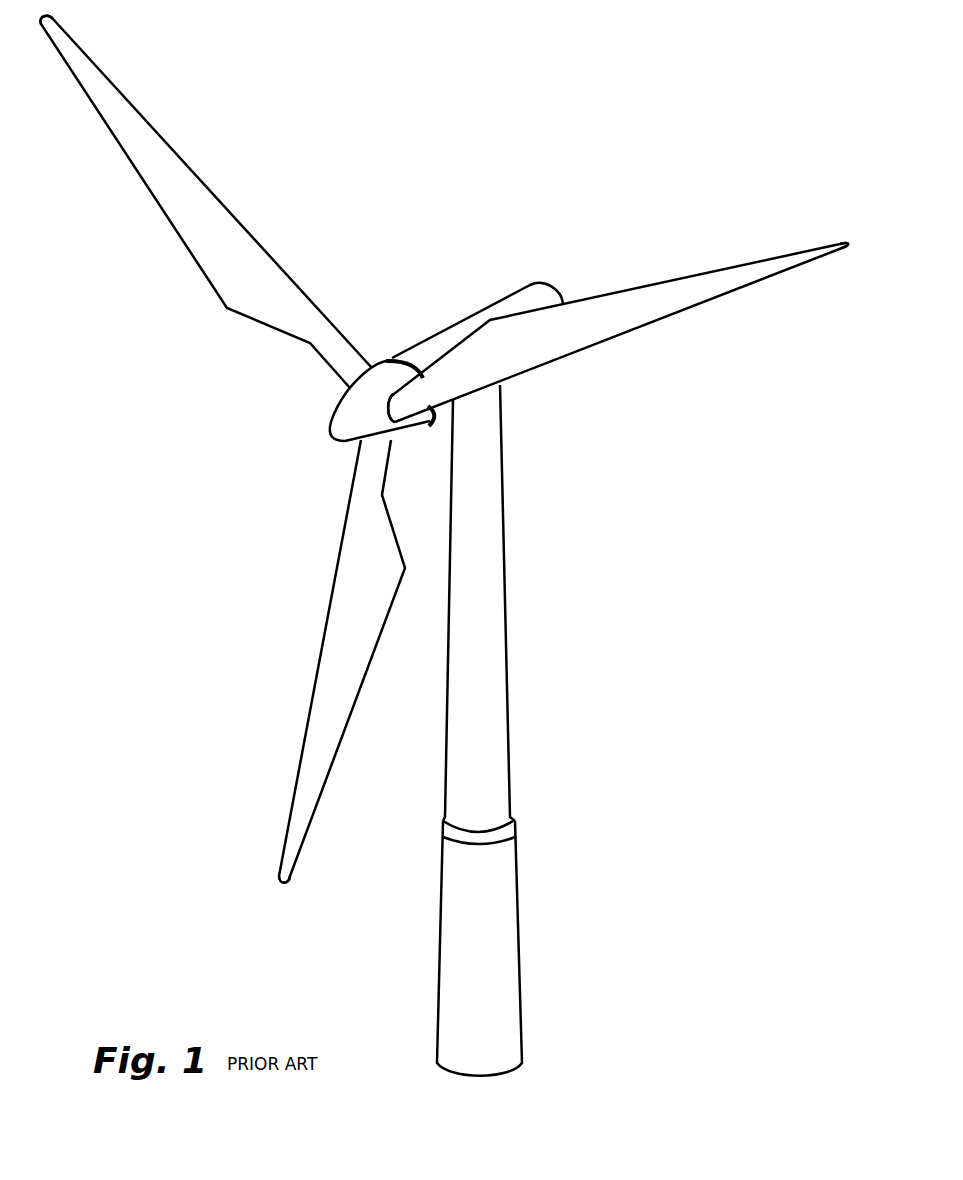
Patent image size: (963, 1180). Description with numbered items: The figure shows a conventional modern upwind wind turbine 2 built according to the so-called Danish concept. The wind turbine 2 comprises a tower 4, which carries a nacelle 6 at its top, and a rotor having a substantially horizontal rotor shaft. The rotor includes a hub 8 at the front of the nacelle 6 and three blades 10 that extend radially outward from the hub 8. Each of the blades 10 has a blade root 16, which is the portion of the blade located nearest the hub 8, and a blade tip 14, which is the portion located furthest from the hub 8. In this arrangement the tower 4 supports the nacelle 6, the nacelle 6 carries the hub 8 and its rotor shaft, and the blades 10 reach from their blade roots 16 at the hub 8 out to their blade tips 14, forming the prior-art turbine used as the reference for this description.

The wind turbine 2 is at (607, 675).
The tower 4 is at (493, 607).
The nacelle 6 is at (437, 342).
The hub 8 is at (350, 417).
The blades 10 is at (238, 283).
The blade tip 14 is at (93, 62).
The blade root 16 is at (345, 388).